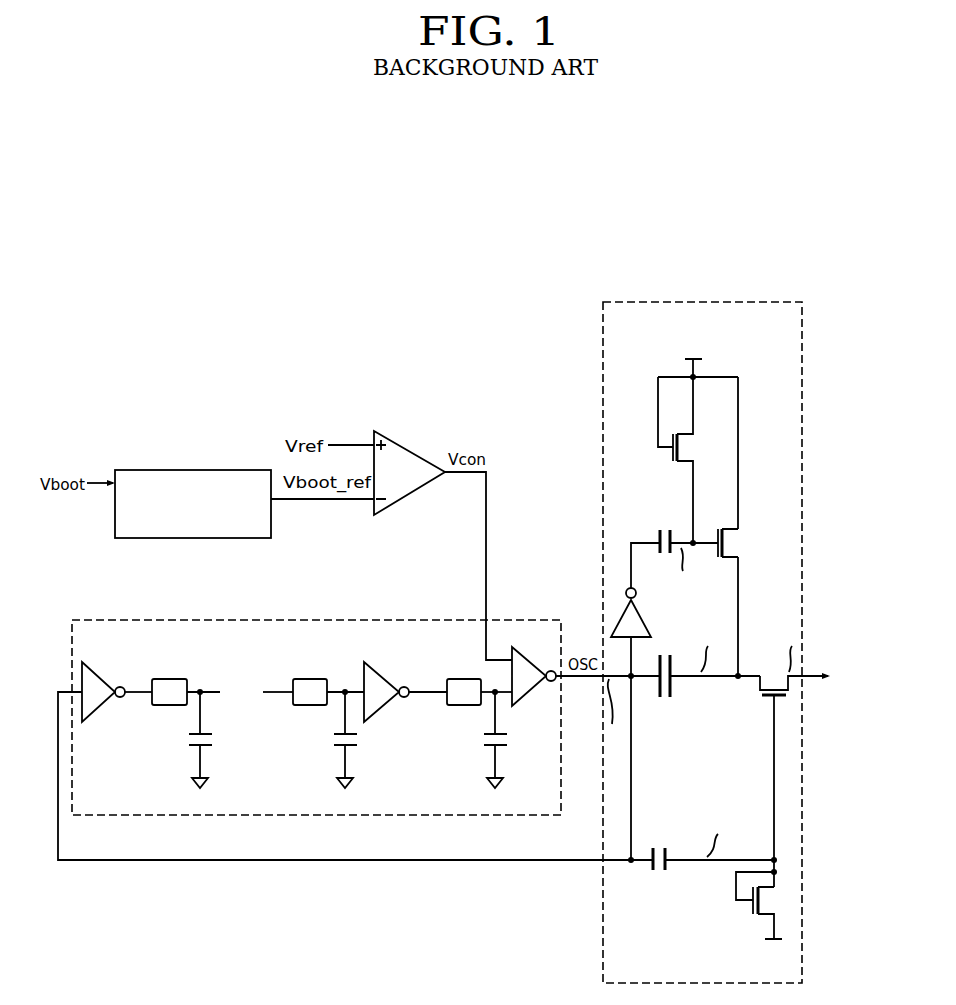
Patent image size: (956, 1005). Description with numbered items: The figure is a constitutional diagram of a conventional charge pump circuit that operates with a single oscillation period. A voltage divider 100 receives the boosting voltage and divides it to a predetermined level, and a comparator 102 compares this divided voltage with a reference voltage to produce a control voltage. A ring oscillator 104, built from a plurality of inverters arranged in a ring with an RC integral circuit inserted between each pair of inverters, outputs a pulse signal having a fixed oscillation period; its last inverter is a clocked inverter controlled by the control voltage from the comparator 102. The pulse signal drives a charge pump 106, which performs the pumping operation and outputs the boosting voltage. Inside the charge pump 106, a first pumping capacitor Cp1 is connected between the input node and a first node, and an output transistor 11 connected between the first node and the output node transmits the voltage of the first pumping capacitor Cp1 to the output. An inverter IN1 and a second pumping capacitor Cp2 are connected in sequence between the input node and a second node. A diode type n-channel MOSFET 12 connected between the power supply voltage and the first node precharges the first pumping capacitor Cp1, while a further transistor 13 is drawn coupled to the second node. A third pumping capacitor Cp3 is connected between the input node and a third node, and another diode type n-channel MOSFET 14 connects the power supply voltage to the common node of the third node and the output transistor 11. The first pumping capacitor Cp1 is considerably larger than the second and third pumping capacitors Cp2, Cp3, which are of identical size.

The voltage divider 100 is at (175, 470).
The comparator 102 is at (403, 445).
The ring oscillator 104 is at (508, 620).
The charge pump 106 is at (802, 374).
The output transistor 11 is at (794, 758).
The diode type n-channel MOSFET 12 is at (695, 460).
The precharge transistor 13 is at (739, 543).
The diode type n-channel MOSFET 14 is at (765, 899).
The inverter IN1 is at (646, 612).
The first pumping capacitor Cp1 is at (669, 690).
The second pumping capacitor Cp2 is at (668, 528).
The third pumping capacitor Cp3 is at (664, 873).